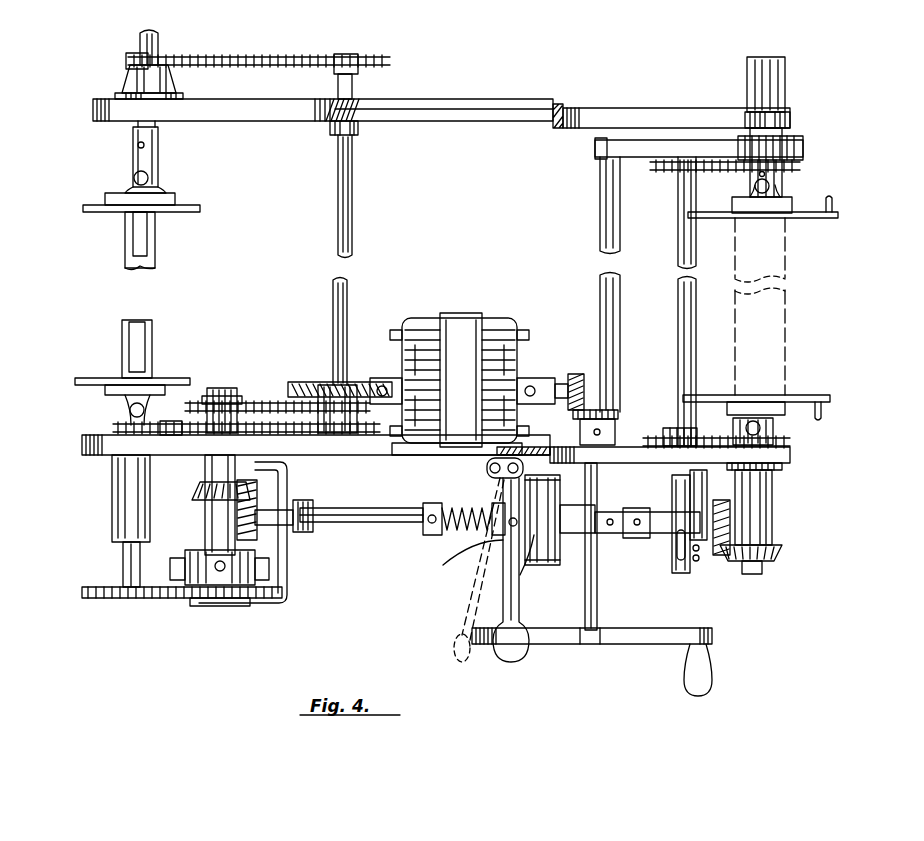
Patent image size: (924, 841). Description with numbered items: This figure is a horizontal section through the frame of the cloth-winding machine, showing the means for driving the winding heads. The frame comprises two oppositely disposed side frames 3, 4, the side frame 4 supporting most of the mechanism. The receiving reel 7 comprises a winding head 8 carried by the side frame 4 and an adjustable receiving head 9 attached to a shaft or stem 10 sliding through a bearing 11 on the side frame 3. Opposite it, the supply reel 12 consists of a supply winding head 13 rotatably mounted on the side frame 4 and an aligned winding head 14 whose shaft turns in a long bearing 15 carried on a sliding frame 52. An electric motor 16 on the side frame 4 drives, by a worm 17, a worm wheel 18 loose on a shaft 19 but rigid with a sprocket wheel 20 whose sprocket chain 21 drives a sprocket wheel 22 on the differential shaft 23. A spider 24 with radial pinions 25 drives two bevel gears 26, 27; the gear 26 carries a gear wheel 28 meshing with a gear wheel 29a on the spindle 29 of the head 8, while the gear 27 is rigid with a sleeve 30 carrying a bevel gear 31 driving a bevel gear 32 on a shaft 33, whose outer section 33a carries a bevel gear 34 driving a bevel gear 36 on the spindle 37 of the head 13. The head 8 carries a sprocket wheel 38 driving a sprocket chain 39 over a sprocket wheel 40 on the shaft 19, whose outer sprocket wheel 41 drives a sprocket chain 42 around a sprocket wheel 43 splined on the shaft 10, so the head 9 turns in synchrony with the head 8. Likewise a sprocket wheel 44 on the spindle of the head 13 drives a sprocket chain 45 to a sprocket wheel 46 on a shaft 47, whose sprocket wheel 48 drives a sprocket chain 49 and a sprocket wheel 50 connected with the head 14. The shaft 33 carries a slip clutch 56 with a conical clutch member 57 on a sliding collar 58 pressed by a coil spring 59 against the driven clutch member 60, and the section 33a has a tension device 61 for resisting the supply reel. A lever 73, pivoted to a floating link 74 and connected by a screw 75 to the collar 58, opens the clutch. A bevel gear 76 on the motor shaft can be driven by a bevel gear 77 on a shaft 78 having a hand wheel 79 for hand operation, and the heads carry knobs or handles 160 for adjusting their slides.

The side frame 3 is at (562, 106).
The side frame 4 is at (415, 456).
The receiving reel 7 is at (115, 246).
The winding head 8 is at (102, 378).
The adjustable receiving head 9 is at (158, 160).
The shaft or stem 10 is at (160, 40).
The bearing 11 is at (176, 84).
The supply reel 12 is at (794, 302).
The supply winding head 13 is at (800, 392).
The winding head 14 is at (793, 212).
The long bearing 15 is at (785, 106).
The electric motor 16 is at (460, 350).
The worm 17 is at (332, 352).
The worm wheel 18 is at (368, 378).
The shaft 19 is at (353, 229).
The sprocket wheel 20 is at (392, 450).
The sprocket chain 21 is at (286, 396).
The sprocket wheel 22 is at (242, 390).
The differential shaft 23 is at (228, 396).
The spider 24 is at (204, 544).
The pinions 25 is at (178, 566).
The bevel gear 26 is at (190, 606).
The bevel gear 27 is at (206, 558).
The gear wheel 28 is at (250, 606).
The spindle or shaft 29 is at (112, 554).
The gear wheel 29a is at (128, 600).
The sleeve 30 is at (256, 538).
The bevel gear 31 is at (200, 484).
The bevel gear 32 is at (254, 492).
The shaft 33 is at (406, 520).
The outer shaft section 33a is at (656, 532).
The bevel gear 34 is at (718, 556).
The bevel gear 36 is at (782, 558).
The shaft or spindle 37 is at (756, 574).
The sprocket wheel 38 is at (112, 428).
The sprocket chain 39 is at (170, 424).
The sprocket wheel 40 is at (318, 492).
The sprocket wheel 41 is at (402, 48).
The sprocket chain 42 is at (305, 60).
The sprocket wheel 43 is at (134, 52).
The sprocket wheel 44 is at (776, 440).
The sprocket chain 45 is at (730, 432).
The sprocket wheel 46 is at (664, 432).
The shaft 47 is at (680, 300).
The sprocket wheel 48 is at (648, 176).
The sprocket chain 49 is at (716, 170).
The sprocket wheel 50 is at (788, 179).
The sliding frame 52 is at (640, 140).
The clutch 56 is at (542, 573).
The conical clutch member 57 is at (459, 570).
The sliding collar 58 is at (496, 532).
The coil spring 59 is at (484, 506).
The driven clutch member 60 is at (522, 570).
The tension device 61 is at (679, 506).
The lever 73 is at (518, 605).
The floating link 74 is at (486, 468).
The screw 75 is at (502, 540).
The bevel gear 76 is at (572, 374).
The bevel gear 77 is at (610, 410).
The shaft 78 is at (598, 556).
The hand wheel 79 is at (652, 646).
The knobs or handles 160 is at (150, 180).